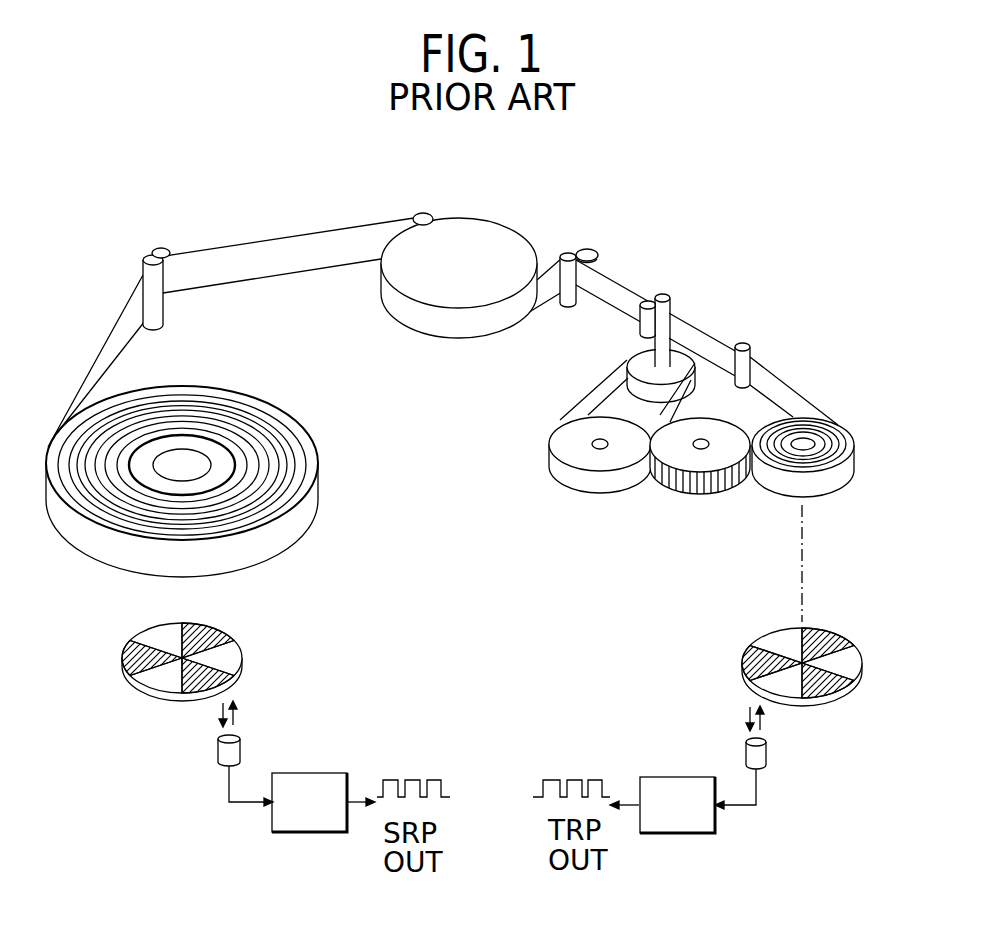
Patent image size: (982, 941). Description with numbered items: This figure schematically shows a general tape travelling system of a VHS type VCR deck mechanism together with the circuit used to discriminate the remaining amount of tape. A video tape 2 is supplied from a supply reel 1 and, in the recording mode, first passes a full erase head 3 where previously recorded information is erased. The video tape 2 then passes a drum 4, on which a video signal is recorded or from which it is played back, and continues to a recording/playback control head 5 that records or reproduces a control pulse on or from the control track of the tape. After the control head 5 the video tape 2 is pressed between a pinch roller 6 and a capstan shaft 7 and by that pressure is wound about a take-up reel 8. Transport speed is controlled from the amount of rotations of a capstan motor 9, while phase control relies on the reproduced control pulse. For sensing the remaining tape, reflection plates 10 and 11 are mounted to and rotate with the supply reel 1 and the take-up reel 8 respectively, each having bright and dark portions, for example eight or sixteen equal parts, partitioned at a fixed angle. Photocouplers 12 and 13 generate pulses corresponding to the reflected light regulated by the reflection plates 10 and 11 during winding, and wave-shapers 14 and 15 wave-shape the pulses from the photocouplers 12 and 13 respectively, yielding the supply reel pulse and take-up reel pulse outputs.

The supply reel 1 is at (273, 450).
The video tape 2 is at (117, 337).
The full erase head 3 is at (170, 248).
The drum 4 is at (477, 240).
The recording/playback control head 5 is at (595, 250).
The pinch roller 6 is at (637, 310).
The capstan shaft 7 is at (668, 296).
The take-up reel 8 is at (833, 437).
The capstan motor 9 is at (683, 362).
The reflection plate 10 is at (132, 643).
The reflection plate 11 is at (753, 647).
The photocoupler 12 is at (229, 753).
The photocoupler 13 is at (760, 757).
The wave-shaper 14 is at (303, 788).
The wave-shaper 15 is at (683, 785).